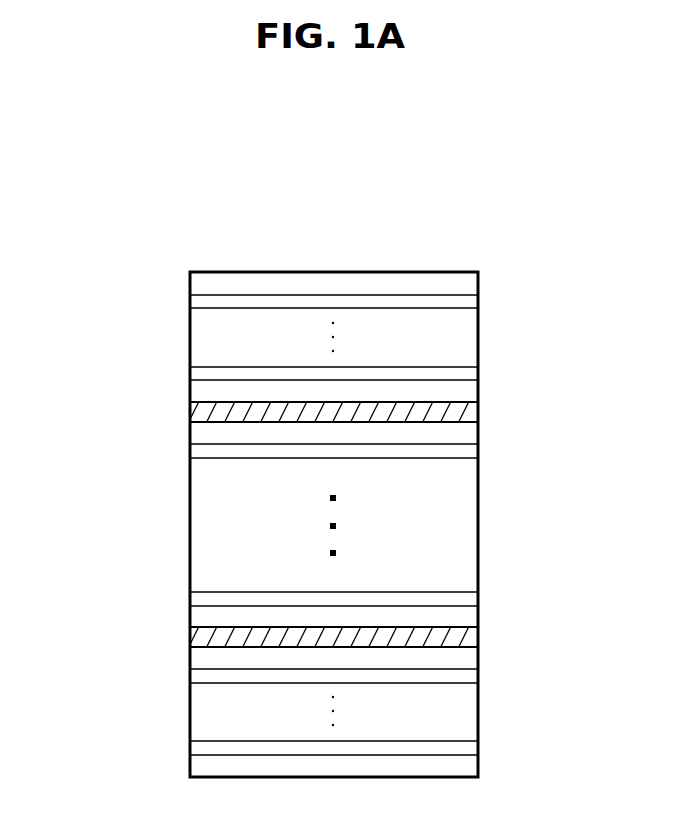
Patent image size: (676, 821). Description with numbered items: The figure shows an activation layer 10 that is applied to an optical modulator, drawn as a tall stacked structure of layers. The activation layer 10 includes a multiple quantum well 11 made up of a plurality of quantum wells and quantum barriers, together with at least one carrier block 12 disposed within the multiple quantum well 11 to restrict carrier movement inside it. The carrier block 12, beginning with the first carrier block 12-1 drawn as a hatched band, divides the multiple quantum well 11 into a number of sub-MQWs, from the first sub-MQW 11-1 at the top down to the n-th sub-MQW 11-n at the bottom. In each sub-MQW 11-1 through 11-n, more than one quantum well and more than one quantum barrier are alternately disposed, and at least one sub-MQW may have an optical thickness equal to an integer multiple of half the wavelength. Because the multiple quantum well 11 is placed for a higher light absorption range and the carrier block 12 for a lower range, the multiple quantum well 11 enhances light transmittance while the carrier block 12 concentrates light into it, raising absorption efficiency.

The activation layer 10 is at (505, 220).
The multiple quantum well 11 is at (395, 525).
The first sub-MQW 11-1 is at (486, 272).
The n-th sub-MQW 11-n is at (370, 714).
The carrier block 12 is at (253, 524).
The first carrier block 12-1 is at (190, 412).